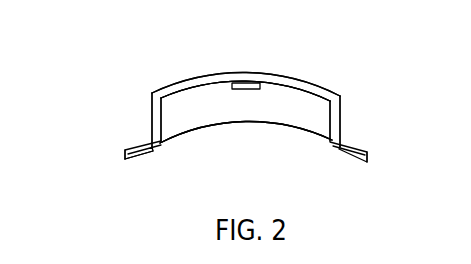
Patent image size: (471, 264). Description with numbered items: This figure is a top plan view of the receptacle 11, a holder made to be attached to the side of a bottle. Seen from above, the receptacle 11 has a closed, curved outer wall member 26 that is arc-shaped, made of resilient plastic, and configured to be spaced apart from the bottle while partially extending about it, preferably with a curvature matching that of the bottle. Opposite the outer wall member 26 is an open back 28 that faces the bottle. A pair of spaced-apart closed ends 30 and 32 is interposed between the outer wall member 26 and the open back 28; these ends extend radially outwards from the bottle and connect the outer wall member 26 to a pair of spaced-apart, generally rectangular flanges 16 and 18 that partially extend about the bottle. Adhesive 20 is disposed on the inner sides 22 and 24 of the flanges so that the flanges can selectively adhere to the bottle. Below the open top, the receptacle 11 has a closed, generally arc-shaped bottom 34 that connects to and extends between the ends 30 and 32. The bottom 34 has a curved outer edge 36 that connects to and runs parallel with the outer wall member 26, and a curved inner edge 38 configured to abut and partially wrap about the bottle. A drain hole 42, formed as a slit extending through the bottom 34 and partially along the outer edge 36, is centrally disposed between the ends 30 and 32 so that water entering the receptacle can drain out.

The receptacle 11 is at (325, 75).
The flange 16 is at (132, 149).
The flange 18 is at (364, 148).
The adhesive 20 is at (140, 160).
The inner side 22 is at (126, 161).
The inner side 24 is at (366, 164).
The outer wall member 26 is at (186, 94).
The open back 28 is at (193, 142).
The end 30 is at (152, 117).
The end 32 is at (342, 110).
The bottom 34 is at (237, 115).
The outer edge 36 is at (292, 88).
The inner edge 38 is at (275, 128).
The drain hole 42 is at (248, 83).